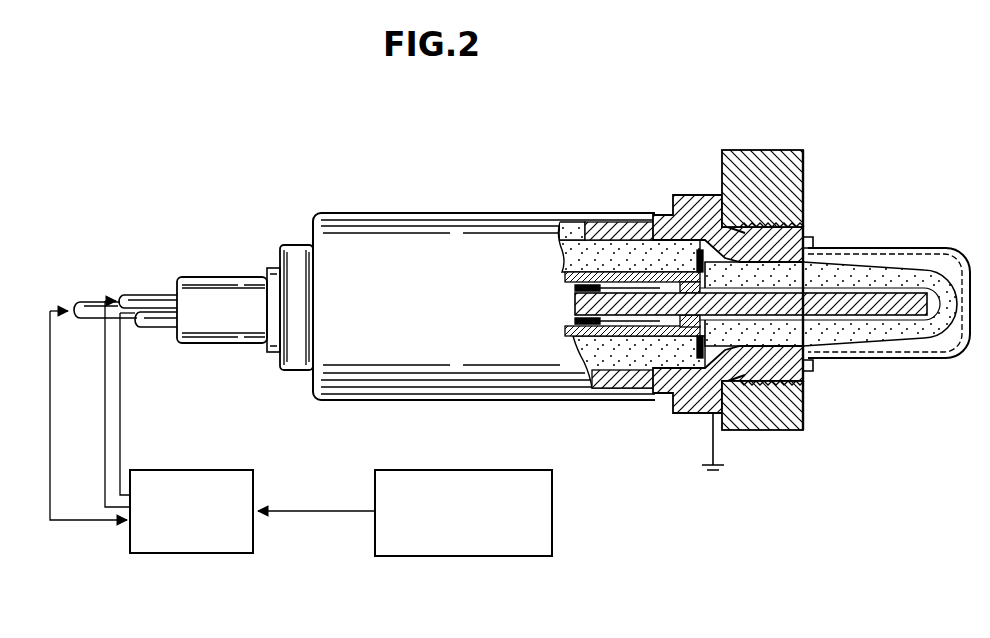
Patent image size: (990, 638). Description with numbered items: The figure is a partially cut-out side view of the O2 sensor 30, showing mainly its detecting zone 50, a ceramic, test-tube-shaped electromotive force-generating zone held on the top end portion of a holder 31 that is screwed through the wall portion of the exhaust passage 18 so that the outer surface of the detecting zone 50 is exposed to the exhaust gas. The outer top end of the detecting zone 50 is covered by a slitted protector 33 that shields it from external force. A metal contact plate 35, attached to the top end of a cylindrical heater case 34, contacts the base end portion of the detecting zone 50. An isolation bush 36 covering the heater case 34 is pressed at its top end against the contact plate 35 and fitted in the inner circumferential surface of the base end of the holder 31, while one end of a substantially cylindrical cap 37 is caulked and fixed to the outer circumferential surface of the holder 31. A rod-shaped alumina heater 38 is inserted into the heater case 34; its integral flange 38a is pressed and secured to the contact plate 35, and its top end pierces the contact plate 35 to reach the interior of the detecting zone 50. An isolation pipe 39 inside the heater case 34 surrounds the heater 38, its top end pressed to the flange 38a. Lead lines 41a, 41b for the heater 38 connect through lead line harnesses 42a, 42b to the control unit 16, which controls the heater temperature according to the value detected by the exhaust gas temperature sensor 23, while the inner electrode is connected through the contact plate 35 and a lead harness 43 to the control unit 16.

The control unit 16 is at (178, 555).
The exhaust passage 18 is at (877, 416).
The exhaust gas temperature sensor 23 is at (465, 558).
The O2 sensor 30 is at (300, 226).
The holder 31 is at (707, 194).
The slitted protector 33 is at (940, 250).
The heater case 34 is at (647, 266).
The contact plate 35 is at (700, 224).
The isolation bush 36 is at (590, 240).
The cap 37 is at (406, 212).
The heater 38 is at (830, 300).
The flange 38a is at (672, 328).
The isolation pipe 39 is at (617, 280).
The lead line 41a is at (604, 376).
The lead line 41b is at (566, 236).
The lead line harness 42a is at (152, 326).
The lead line harness 42b is at (150, 296).
The lead harness 43 is at (90, 309).
The detecting zone 50 is at (890, 274).